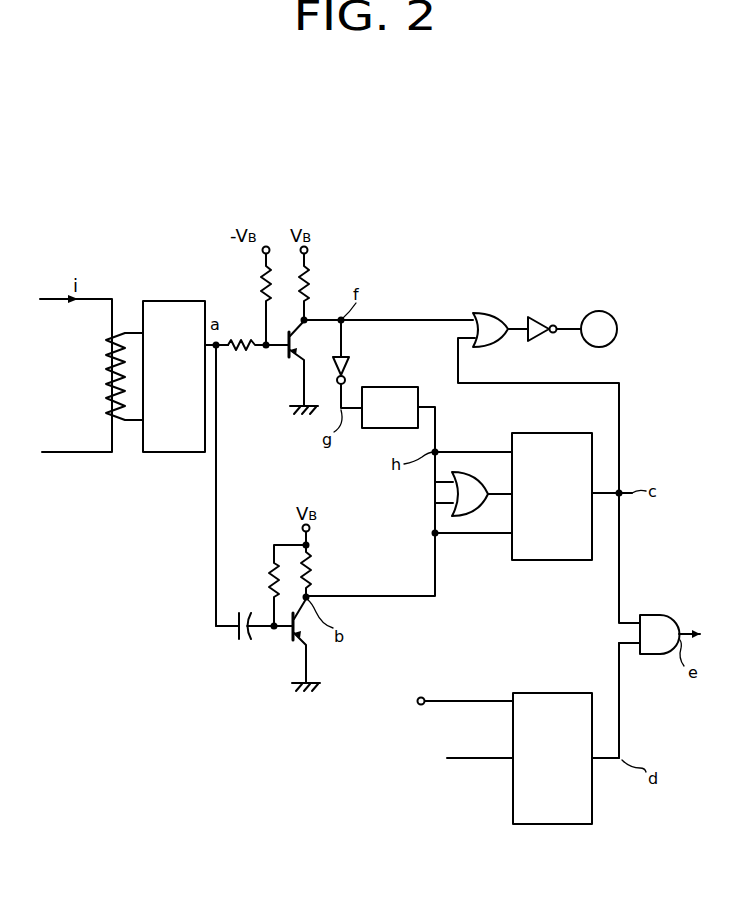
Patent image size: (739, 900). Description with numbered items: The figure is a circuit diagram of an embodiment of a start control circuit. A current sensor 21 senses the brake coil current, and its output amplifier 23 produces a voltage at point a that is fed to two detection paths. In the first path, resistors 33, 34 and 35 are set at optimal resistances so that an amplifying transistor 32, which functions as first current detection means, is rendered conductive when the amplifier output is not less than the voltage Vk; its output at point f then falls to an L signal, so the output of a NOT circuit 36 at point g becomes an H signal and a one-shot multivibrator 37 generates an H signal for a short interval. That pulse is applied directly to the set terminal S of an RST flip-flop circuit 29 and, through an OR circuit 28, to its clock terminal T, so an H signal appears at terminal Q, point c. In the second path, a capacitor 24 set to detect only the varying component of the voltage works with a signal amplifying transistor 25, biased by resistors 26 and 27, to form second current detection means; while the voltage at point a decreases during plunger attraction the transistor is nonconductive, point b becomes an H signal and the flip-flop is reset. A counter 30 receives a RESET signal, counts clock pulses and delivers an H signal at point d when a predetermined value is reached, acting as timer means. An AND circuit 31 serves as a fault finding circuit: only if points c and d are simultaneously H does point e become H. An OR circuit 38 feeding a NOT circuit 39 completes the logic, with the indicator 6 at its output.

The current sensor 21 is at (107, 397).
The output amplifier 23 is at (175, 301).
The capacitor 24 is at (243, 613).
The signal amplifying transistor 25 is at (292, 641).
The resistor 26 is at (270, 574).
The resistor 27 is at (314, 563).
The OR circuit 28 is at (478, 473).
The RST flip-flop circuit 29 is at (542, 433).
The counter 30 is at (556, 693).
The AND circuit 31 is at (655, 614).
The amplifying transistor 32 is at (287, 353).
The resistor 33 is at (243, 338).
The resistor 34 is at (262, 285).
The resistor 35 is at (312, 292).
The NOT circuit 36 is at (349, 364).
The one-shot multivibrator 37 is at (398, 387).
The OR circuit 38 is at (489, 313).
The NOT circuit 39 is at (543, 317).
The indicator 6 is at (600, 311).